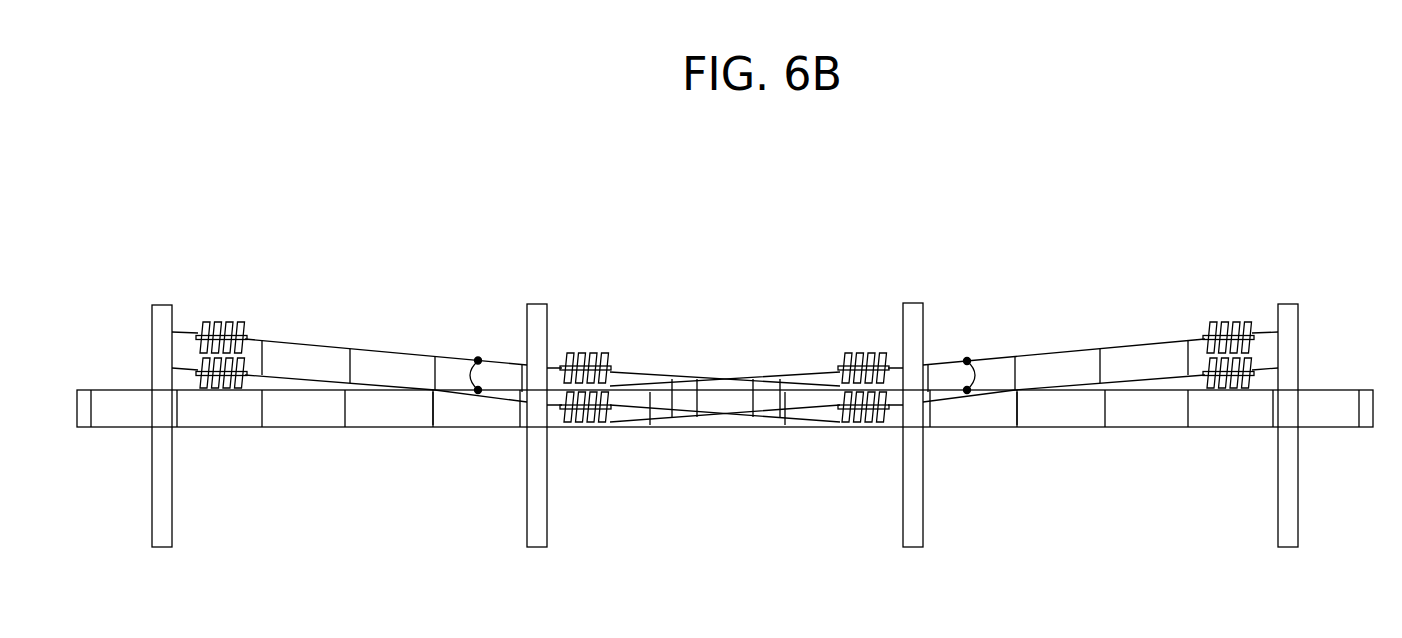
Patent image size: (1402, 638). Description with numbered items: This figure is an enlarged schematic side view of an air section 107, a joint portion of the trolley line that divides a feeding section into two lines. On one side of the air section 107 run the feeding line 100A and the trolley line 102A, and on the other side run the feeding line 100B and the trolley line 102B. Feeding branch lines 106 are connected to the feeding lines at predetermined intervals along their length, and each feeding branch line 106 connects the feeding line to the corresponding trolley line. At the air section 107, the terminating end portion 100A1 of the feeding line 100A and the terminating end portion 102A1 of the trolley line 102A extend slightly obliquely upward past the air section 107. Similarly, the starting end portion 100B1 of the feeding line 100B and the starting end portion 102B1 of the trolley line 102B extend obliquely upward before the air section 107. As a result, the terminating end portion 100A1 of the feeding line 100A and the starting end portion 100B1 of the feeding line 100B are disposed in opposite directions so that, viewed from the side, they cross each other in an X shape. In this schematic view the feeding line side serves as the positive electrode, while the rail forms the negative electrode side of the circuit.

The feeding line 100A is at (311, 388).
The feeding line 100B is at (625, 372).
The terminating end portion of the feeding line 100A1 is at (1203, 337).
The starting end portion of the feeding line 100B1 is at (258, 334).
The trolley line 102A is at (413, 427).
The trolley line 102B is at (785, 427).
The terminating end portion of the trolley line 102A1 is at (1197, 377).
The starting end portion of the trolley line 102B1 is at (253, 382).
The feeding branch line 106 is at (347, 405).
The air section 107 is at (746, 300).